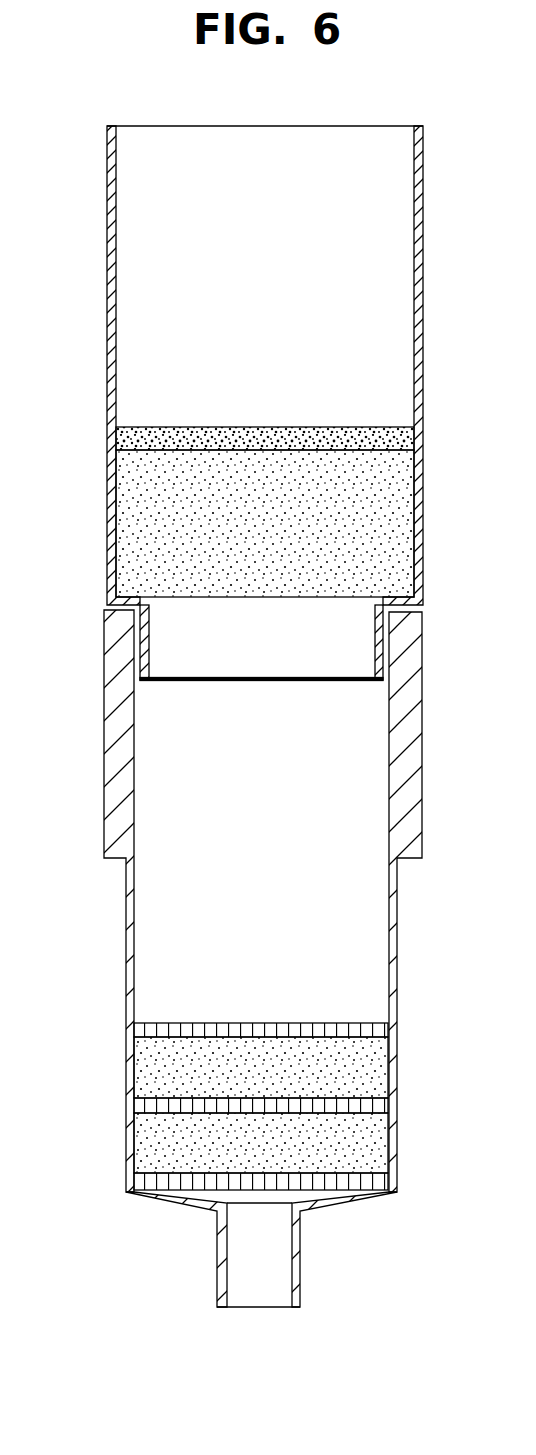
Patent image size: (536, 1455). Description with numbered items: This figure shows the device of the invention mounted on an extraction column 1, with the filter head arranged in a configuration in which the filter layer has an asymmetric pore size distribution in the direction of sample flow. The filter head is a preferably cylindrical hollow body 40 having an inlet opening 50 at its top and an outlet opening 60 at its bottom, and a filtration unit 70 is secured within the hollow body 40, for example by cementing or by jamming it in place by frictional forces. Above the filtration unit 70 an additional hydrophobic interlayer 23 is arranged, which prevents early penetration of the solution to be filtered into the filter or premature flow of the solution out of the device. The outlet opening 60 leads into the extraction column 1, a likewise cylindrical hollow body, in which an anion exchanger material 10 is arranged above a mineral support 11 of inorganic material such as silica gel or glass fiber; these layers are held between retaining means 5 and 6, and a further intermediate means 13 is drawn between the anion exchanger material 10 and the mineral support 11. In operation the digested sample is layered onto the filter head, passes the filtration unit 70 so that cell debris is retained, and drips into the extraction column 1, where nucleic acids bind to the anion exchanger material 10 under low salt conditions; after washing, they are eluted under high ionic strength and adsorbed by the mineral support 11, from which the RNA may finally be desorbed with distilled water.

The extraction column 1 is at (112, 762).
The means 5 is at (146, 1030).
The means 6 is at (147, 1182).
The anion exchanger material 10 is at (146, 1073).
The mineral support 11 is at (148, 1144).
The intermediate mesh screen 13 is at (148, 1105).
The hydrophobic interlayer 23 is at (128, 440).
The hollow body 40 is at (112, 182).
The inlet opening 50 is at (248, 147).
The outlet opening 60 is at (165, 641).
The filtration unit 70 is at (125, 516).